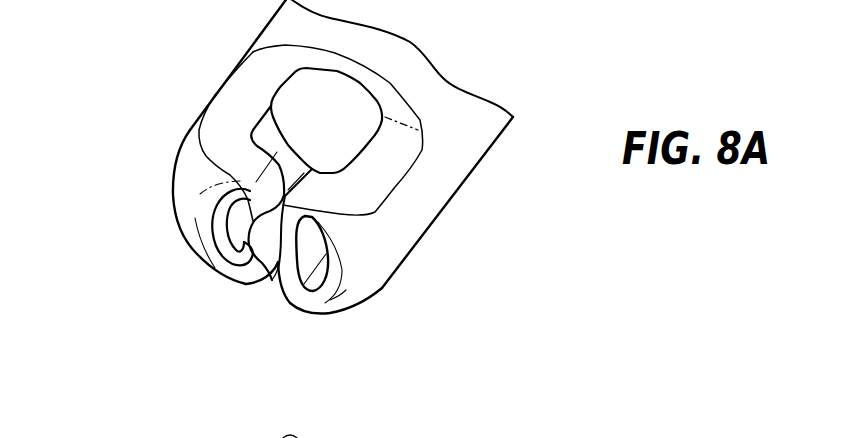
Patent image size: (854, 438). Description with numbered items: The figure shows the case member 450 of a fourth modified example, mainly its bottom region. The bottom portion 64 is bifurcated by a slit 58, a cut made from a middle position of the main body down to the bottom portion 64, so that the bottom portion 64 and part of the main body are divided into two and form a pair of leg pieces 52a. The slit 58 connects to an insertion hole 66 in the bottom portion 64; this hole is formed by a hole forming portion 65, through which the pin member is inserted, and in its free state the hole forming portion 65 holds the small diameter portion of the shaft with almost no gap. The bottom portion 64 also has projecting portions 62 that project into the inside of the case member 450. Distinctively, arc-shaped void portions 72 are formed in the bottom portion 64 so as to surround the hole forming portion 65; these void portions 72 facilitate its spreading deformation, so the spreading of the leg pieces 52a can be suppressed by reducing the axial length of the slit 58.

The case member 450 is at (206, 338).
The leg pieces 52a is at (285, 70).
The slit 58 is at (248, 145).
The projecting portions 62 is at (283, 212).
The bottom portion 64 is at (338, 278).
The hole forming portion 65 is at (265, 227).
The insertion hole 66 is at (279, 270).
The void portions 72 is at (216, 207).